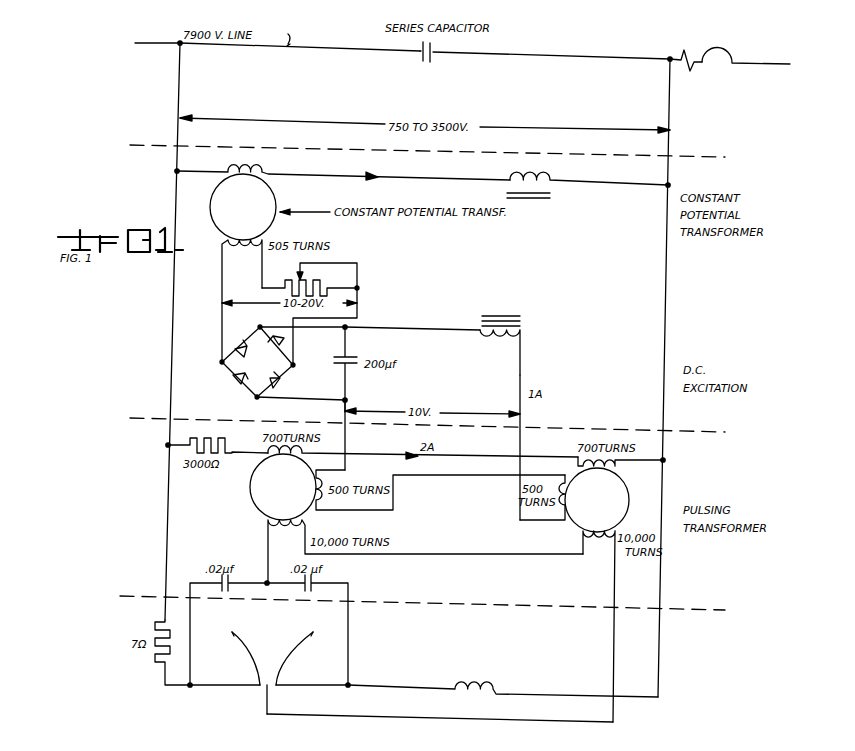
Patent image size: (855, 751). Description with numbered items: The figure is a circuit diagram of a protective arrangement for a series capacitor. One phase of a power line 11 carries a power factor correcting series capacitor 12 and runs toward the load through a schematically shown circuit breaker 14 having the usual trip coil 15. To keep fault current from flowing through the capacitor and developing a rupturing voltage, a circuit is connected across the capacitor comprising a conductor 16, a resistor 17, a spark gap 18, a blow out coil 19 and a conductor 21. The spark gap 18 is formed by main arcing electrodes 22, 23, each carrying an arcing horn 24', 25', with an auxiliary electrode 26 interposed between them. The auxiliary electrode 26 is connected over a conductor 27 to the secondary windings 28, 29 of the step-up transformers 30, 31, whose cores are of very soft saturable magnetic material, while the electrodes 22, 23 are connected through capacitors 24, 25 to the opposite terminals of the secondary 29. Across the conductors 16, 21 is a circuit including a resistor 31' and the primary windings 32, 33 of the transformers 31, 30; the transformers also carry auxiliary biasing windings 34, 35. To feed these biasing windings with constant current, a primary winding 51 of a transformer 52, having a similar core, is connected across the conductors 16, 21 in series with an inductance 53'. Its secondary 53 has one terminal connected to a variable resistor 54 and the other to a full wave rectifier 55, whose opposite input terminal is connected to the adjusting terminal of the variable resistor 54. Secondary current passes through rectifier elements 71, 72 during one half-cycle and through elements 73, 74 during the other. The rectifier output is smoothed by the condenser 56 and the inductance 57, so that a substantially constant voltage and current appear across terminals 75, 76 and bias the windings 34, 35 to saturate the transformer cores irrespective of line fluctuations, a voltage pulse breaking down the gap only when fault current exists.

The power line 11 is at (148, 43).
The series capacitor 12 is at (432, 57).
The circuit breaker 14 is at (728, 48).
The trip coil 15 is at (684, 57).
The conductor 16 is at (172, 312).
The resistor 17 is at (180, 618).
The spark gap 18 is at (252, 665).
The blow out coil 19 is at (485, 693).
The conductor 21 is at (668, 320).
The main arcing electrode 22 is at (255, 683).
The main arcing electrode 23 is at (280, 684).
The capacitor 24 is at (229, 630).
The arcing horn 24' is at (250, 632).
The capacitor 25 is at (307, 630).
The arcing horn 25' is at (314, 644).
The auxiliary electrode 26 is at (265, 708).
The conductor 27 is at (562, 722).
The secondary winding 28 is at (600, 540).
The secondary winding 29 is at (285, 530).
The step-up transformer 30 is at (625, 490).
The step-up transformer 31 is at (263, 487).
The resistor 31' is at (217, 439).
The primary winding 32 is at (265, 458).
The primary winding 33 is at (580, 462).
The auxiliary biasing winding 34 is at (318, 502).
The auxiliary biasing winding 35 is at (560, 512).
The primary winding 51 is at (255, 170).
The transformer 52 is at (218, 219).
The secondary 53 is at (242, 301).
The inductance 53' is at (588, 179).
The variable resistor 54 is at (312, 282).
The full wave rectifier 55 is at (238, 362).
The smoothing condenser 56 is at (352, 356).
The inductance 57 is at (522, 331).
The rectifier element 71 is at (238, 340).
The rectifier element 72 is at (278, 386).
The rectifier element 73 is at (230, 382).
The rectifier element 74 is at (282, 342).
The output terminal 75 is at (350, 402).
The output terminal 76 is at (518, 378).